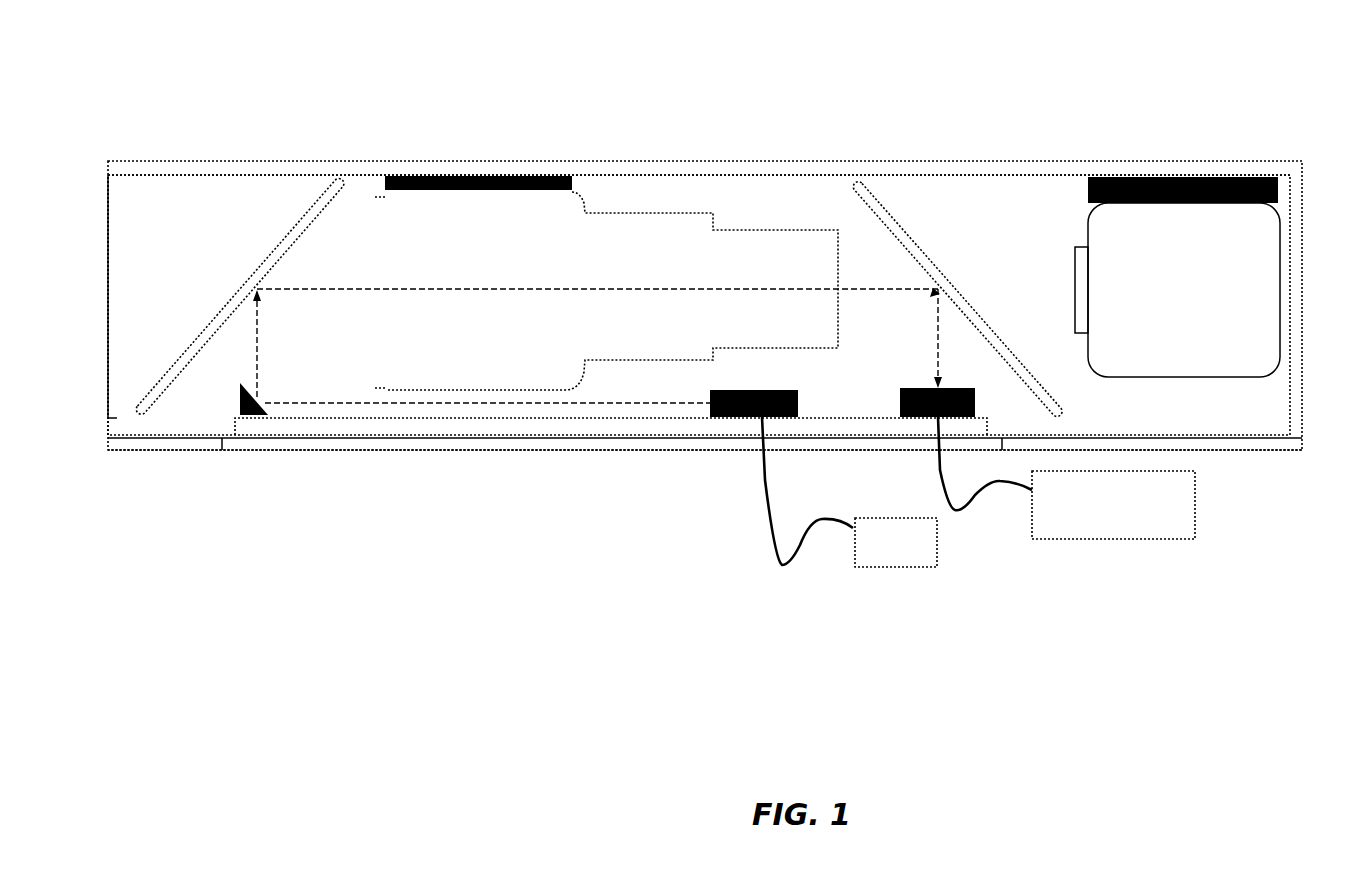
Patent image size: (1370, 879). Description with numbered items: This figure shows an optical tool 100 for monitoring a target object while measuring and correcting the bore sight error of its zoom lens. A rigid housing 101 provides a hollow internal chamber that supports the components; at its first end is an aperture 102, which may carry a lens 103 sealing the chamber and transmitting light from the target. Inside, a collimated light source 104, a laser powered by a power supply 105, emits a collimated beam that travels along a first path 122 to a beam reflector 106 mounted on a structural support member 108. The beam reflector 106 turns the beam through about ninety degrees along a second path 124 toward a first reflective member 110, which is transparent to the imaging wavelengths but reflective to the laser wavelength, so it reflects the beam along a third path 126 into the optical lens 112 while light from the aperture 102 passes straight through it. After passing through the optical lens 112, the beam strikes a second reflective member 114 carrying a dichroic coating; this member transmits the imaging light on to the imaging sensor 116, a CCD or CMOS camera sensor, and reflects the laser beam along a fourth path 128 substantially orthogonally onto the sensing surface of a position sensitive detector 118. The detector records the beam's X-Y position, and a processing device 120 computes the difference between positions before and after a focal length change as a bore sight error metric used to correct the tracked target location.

The optical tool 100 is at (1202, 742).
The housing 101 is at (847, 161).
The aperture 102 is at (122, 425).
The lens 103 is at (107, 270).
The collimated light source 104 is at (743, 417).
The power supply 105 is at (905, 563).
The beam reflector 106 is at (250, 402).
The structural support member 108 is at (590, 430).
The first reflective member 110 is at (297, 223).
The optical lens 112 is at (642, 215).
The second reflective member 114 is at (915, 232).
The imaging sensor 116 is at (1282, 220).
The position sensitive detector 118 is at (950, 417).
The processing device 120 is at (1118, 539).
The first path 122 is at (300, 402).
The second path 124 is at (255, 337).
The third path 126 is at (325, 292).
The fourth path 128 is at (940, 333).